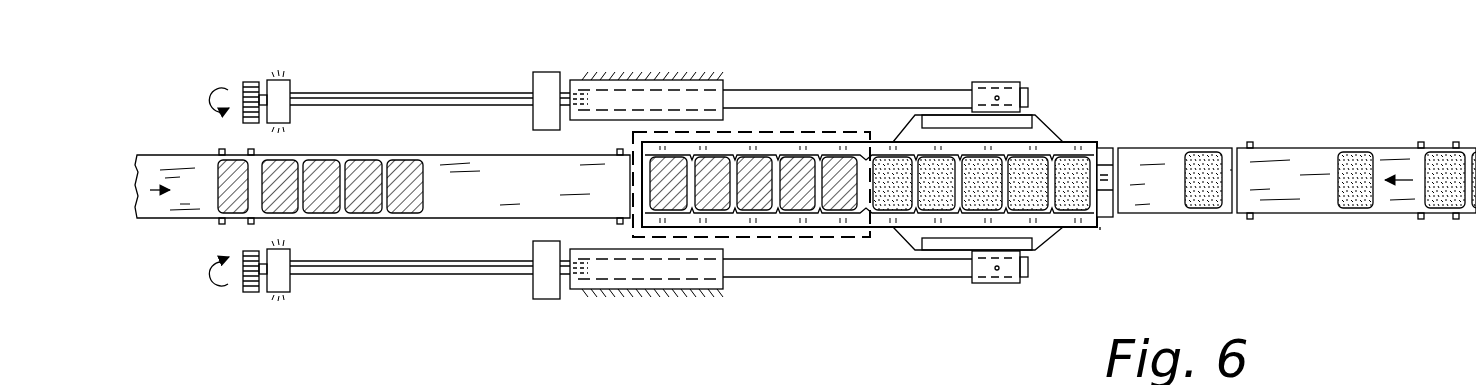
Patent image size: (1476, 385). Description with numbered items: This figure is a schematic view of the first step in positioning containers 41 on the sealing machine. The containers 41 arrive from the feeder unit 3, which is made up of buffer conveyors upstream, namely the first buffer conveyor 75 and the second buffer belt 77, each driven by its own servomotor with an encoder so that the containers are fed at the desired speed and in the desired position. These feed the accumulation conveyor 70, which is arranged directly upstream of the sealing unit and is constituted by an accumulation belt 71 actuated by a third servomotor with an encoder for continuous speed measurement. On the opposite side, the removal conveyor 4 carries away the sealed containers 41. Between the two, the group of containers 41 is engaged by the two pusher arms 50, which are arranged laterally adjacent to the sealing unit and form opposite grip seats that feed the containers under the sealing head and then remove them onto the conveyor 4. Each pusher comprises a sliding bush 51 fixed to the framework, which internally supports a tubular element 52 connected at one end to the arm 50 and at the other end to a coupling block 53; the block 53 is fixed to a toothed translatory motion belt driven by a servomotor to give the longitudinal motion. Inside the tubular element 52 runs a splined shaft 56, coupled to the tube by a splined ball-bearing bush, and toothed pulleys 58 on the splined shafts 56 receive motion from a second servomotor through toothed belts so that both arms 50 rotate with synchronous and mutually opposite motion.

The feeder unit 3 is at (1297, 153).
The conveyor 4 is at (447, 147).
The containers 41 is at (360, 205).
The pusher arms 50 is at (1042, 108).
The sliding bush 51 is at (643, 80).
The tubular element 52 is at (817, 97).
The coupling block 53 is at (548, 72).
The splined shaft 56 is at (347, 95).
The toothed pulleys 58 is at (253, 73).
The accumulation conveyor 70 is at (1110, 227).
The accumulation belt 71 is at (1110, 148).
The first buffer conveyor 75 is at (1318, 207).
The second buffer belt 77 is at (1168, 208).